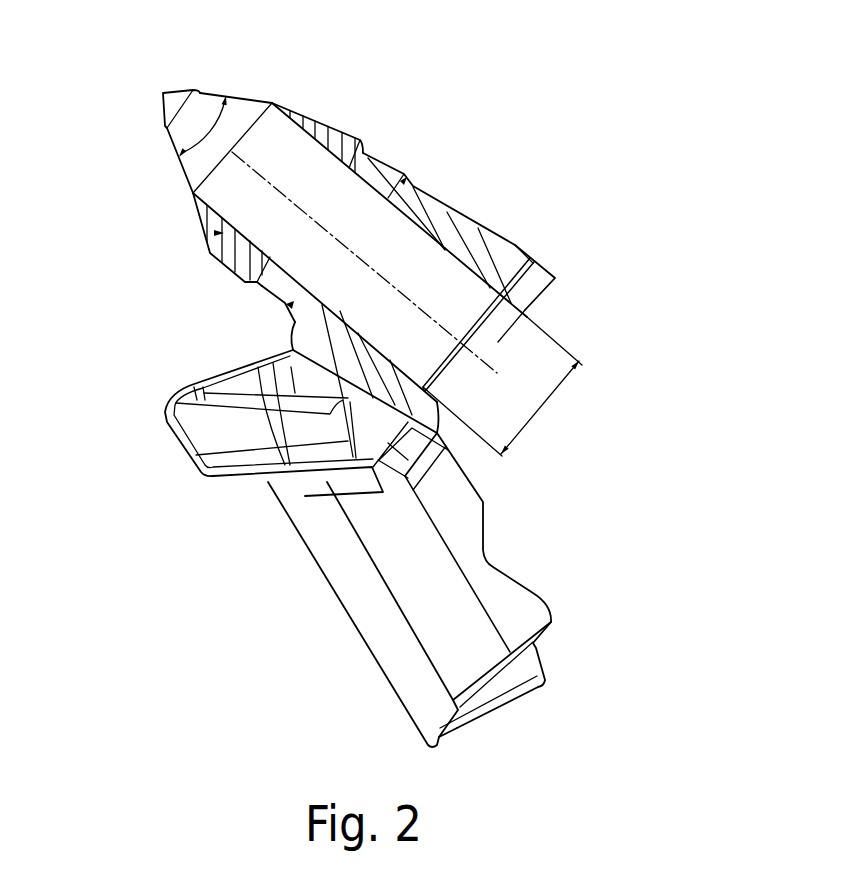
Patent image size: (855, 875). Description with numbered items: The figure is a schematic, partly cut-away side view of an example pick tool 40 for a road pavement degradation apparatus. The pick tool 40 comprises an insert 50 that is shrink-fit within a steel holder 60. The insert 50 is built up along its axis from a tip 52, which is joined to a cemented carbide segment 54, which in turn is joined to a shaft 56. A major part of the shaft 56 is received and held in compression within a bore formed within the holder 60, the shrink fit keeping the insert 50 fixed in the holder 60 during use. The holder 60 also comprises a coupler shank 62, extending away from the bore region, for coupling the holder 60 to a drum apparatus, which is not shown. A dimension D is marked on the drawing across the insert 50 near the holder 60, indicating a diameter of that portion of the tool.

The pick tool 40 is at (480, 150).
The insert 50 is at (137, 71).
The tip 52 is at (162, 95).
The cemented carbide segment 54 is at (172, 107).
The shaft 56 is at (282, 148).
The holder 60 is at (292, 328).
The coupler shank 62 is at (370, 625).
The body diameter D is at (540, 407).